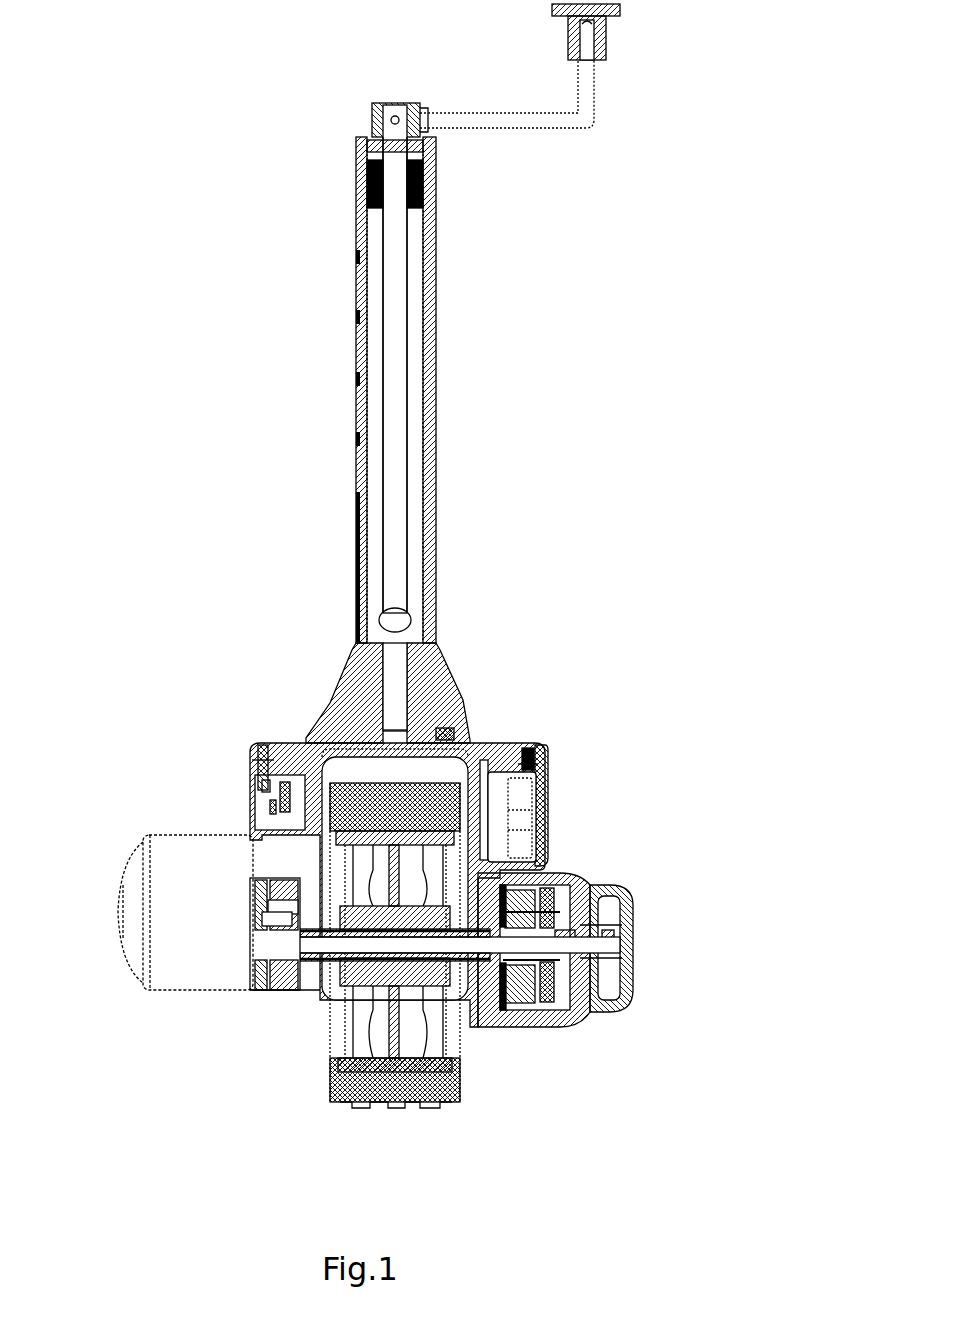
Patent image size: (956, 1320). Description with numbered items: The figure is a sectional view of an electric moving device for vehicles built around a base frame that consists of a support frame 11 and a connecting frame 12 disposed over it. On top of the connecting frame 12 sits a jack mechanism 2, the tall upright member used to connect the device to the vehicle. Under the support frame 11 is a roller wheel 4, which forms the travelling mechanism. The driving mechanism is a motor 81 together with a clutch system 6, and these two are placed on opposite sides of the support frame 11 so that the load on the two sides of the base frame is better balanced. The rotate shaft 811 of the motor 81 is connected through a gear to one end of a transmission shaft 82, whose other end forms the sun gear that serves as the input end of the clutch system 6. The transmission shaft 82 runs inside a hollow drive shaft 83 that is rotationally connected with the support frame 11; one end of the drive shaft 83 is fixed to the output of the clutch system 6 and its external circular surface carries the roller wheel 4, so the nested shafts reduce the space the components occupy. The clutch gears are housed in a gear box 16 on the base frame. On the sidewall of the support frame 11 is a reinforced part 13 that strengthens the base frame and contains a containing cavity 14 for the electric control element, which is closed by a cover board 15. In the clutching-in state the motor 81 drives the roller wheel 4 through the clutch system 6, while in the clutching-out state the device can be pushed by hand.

The jack mechanism 2 is at (398, 437).
The roller wheel 4 is at (335, 1108).
The clutch system 6 is at (530, 1022).
The support frame 11 is at (320, 758).
The connecting frame 12 is at (355, 665).
The reinforced part 13 is at (532, 757).
The containing cavity 14 is at (497, 797).
The cover board 15 is at (540, 786).
The gear box 16 is at (553, 872).
The motor 81 is at (190, 920).
The rotate shaft 811 is at (247, 925).
The transmission shaft 82 is at (300, 975).
The drive shaft 83 is at (330, 975).